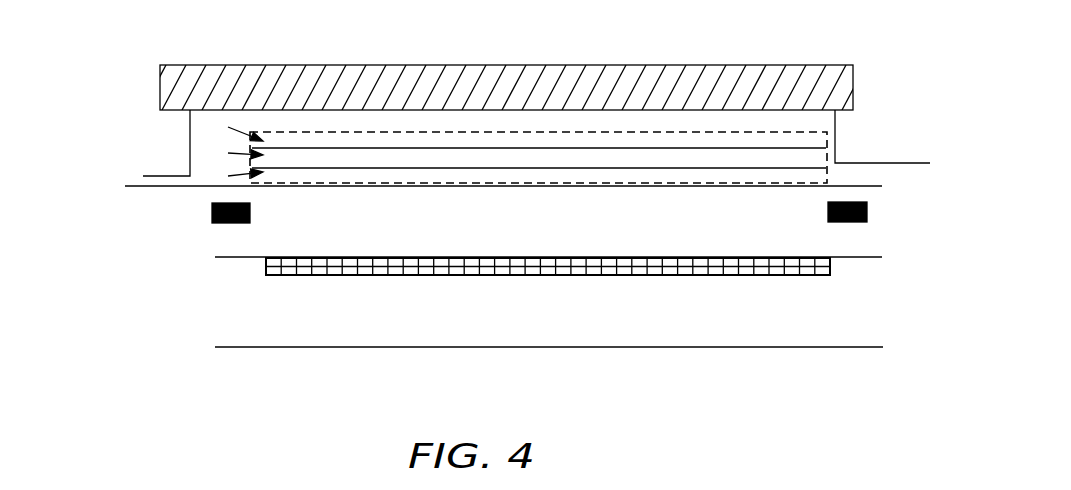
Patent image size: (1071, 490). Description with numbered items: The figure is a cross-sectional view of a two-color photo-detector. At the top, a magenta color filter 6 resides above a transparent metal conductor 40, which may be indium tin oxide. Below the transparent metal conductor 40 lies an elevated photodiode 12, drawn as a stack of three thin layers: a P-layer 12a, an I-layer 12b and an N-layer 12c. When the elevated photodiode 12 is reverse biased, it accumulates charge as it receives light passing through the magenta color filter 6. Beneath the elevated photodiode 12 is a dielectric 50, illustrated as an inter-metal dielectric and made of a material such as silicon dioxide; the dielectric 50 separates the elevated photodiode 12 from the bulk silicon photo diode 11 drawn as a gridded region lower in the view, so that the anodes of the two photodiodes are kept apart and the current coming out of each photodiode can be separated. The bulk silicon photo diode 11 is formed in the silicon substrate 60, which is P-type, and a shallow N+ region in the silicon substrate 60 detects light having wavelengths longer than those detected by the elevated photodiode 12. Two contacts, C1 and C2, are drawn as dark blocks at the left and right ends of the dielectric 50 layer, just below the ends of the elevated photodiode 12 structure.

The magenta color filter 6 is at (574, 78).
The transparent metal conductor 40 is at (341, 117).
The elevated photodiode 12 is at (667, 130).
The P-layer 12a is at (207, 126).
The I-layer 12b is at (208, 152).
The N-layer 12c is at (208, 175).
The dielectric 50 is at (503, 221).
The bulk Si photo diode 11 is at (640, 284).
The silicon substrate 60 is at (501, 332).
The contact C1 is at (212, 214).
The contact C2 is at (867, 214).